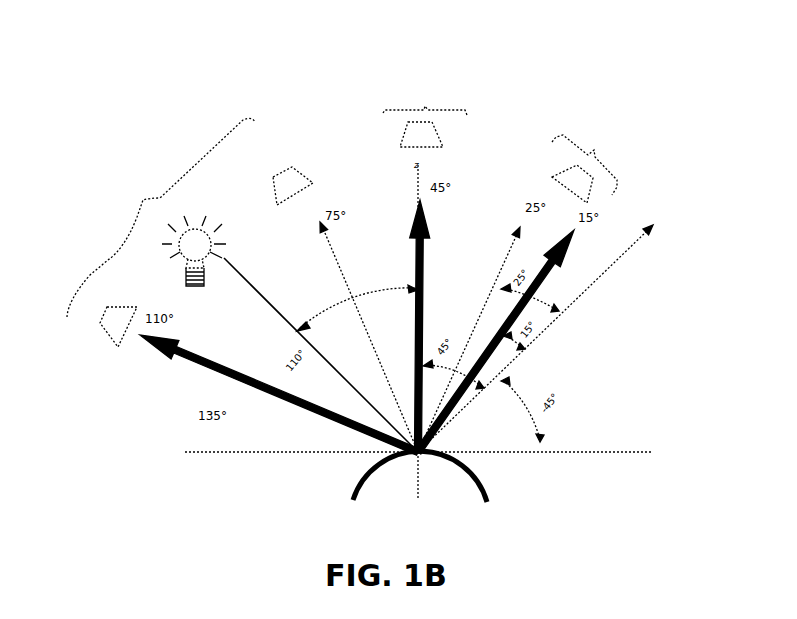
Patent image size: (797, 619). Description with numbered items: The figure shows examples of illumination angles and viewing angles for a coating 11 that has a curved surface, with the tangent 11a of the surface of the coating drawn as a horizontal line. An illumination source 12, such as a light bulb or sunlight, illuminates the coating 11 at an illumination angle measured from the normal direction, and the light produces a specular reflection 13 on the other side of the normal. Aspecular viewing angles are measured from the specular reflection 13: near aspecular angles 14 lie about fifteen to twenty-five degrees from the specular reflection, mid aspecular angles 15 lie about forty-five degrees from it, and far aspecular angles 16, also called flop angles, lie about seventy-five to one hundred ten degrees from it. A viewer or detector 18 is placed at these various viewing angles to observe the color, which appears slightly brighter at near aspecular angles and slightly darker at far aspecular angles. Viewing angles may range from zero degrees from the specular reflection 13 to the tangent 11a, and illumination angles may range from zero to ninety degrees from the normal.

The coating 11 is at (477, 477).
The tangent of the surface of the coating 11a is at (446, 477).
The illumination source 12 is at (197, 228).
The specular reflection 13 is at (640, 247).
The near aspecular angles 14 is at (605, 112).
The mid aspecular angles 15 is at (425, 98).
The far aspecular angles 16 is at (128, 182).
The detector 18 is at (307, 176).